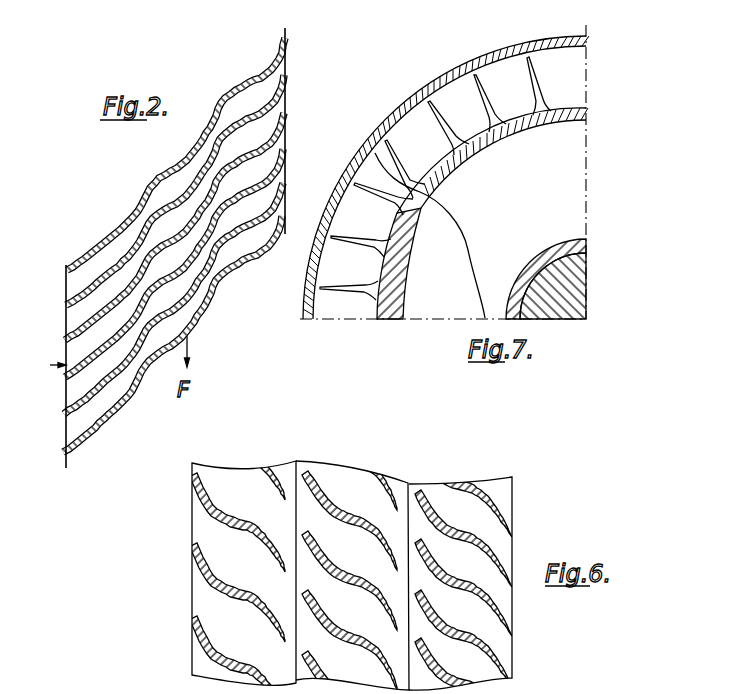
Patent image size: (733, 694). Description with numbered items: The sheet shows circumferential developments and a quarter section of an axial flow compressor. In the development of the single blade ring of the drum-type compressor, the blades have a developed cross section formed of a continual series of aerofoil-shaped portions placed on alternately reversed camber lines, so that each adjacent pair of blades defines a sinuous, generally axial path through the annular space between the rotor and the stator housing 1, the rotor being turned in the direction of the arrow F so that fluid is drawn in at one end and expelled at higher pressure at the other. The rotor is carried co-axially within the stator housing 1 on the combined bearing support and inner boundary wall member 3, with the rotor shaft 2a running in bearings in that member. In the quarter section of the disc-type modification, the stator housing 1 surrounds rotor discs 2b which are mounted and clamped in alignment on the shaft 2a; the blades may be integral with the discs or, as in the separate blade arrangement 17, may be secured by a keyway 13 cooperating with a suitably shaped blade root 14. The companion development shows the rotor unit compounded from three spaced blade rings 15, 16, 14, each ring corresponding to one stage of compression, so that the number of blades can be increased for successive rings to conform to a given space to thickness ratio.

In FIG. 7, the stator housing 1 is at (455, 63).
In FIG. 7, the rotor shaft 2a is at (586, 297).
In FIG. 7, the rotor disc 2b is at (586, 239).
In FIG. 2, the combined bearing support and inner boundary wall member 3 is at (126, 221).
In FIG. 7, the keyway 13 is at (405, 248).
In FIG. 7, the blade root 14 is at (377, 304).
In FIG. 6, the blade ring 15 is at (239, 463).
In FIG. 6, the blade ring 16 is at (340, 458).
In FIG. 6, the separate blade attachment 17 is at (455, 482).